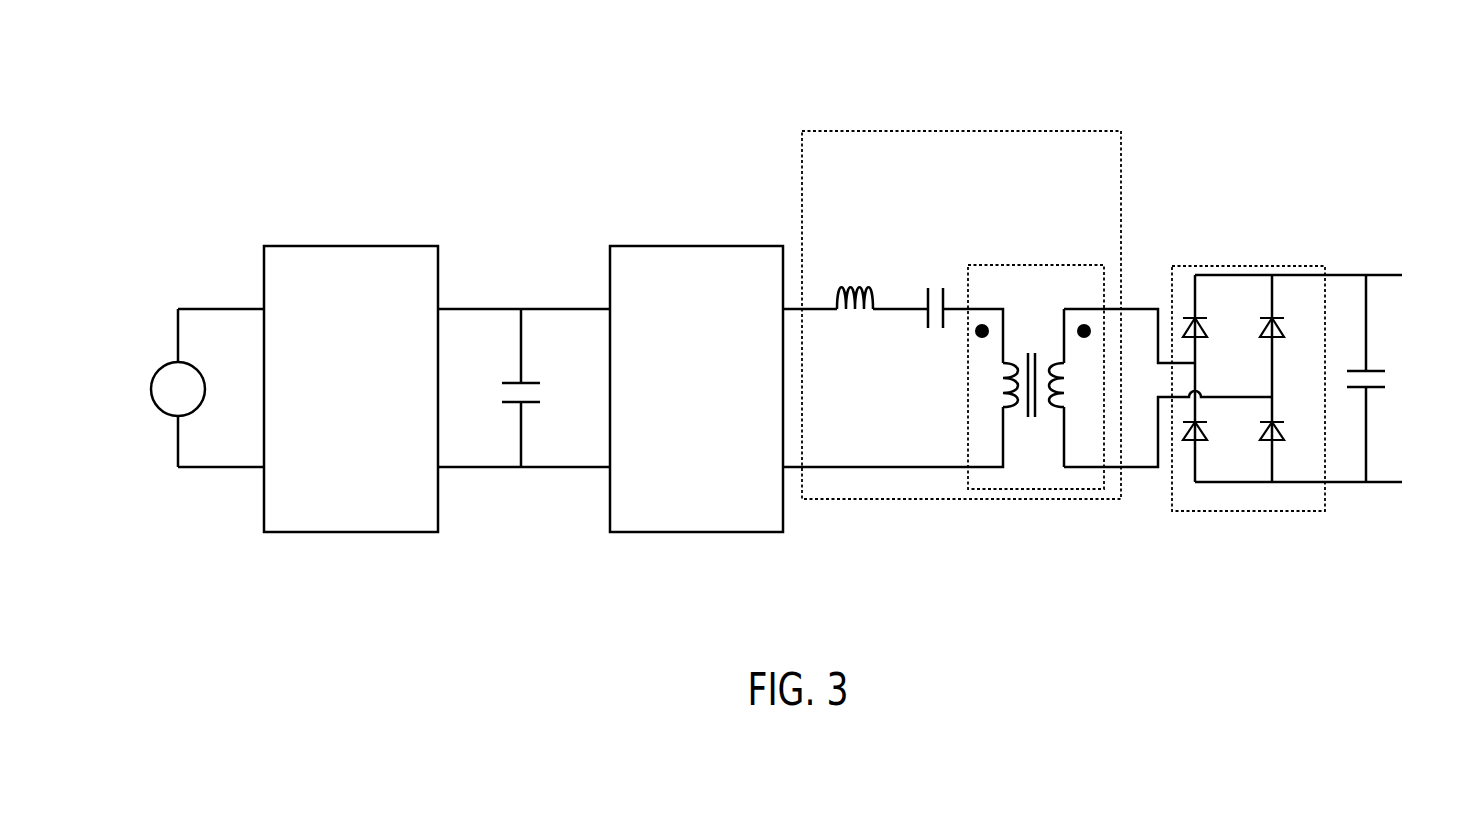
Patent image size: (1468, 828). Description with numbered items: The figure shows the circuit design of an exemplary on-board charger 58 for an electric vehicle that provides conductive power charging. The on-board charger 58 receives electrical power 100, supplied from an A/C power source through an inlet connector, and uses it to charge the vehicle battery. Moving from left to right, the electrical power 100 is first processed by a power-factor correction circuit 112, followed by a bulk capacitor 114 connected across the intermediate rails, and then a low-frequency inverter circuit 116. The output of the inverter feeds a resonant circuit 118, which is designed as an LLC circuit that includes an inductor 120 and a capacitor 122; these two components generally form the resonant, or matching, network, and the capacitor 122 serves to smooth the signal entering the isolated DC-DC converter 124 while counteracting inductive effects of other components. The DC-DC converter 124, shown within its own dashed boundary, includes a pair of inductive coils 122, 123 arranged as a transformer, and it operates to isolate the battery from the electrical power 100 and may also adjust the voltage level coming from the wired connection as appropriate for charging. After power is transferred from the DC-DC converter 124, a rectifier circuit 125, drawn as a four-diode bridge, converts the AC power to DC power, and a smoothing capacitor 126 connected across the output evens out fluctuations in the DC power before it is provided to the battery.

The on-board charger 58 is at (1210, 103).
The electrical power 100 is at (151, 390).
The power-factor correction (PFC) circuit 112 is at (351, 246).
The bulk capacitor 114 is at (535, 362).
The low-frequency (LF) inverter circuit 116 is at (697, 246).
The resonant circuit 118 is at (995, 131).
The inductor 120 is at (852, 322).
The capacitor 122 is at (930, 346).
The inductive coil 123 is at (1073, 451).
The DC-DC converter 124 is at (1033, 265).
The rectifier circuit 125 is at (1225, 266).
The smoothing capacitor 126 is at (1392, 358).